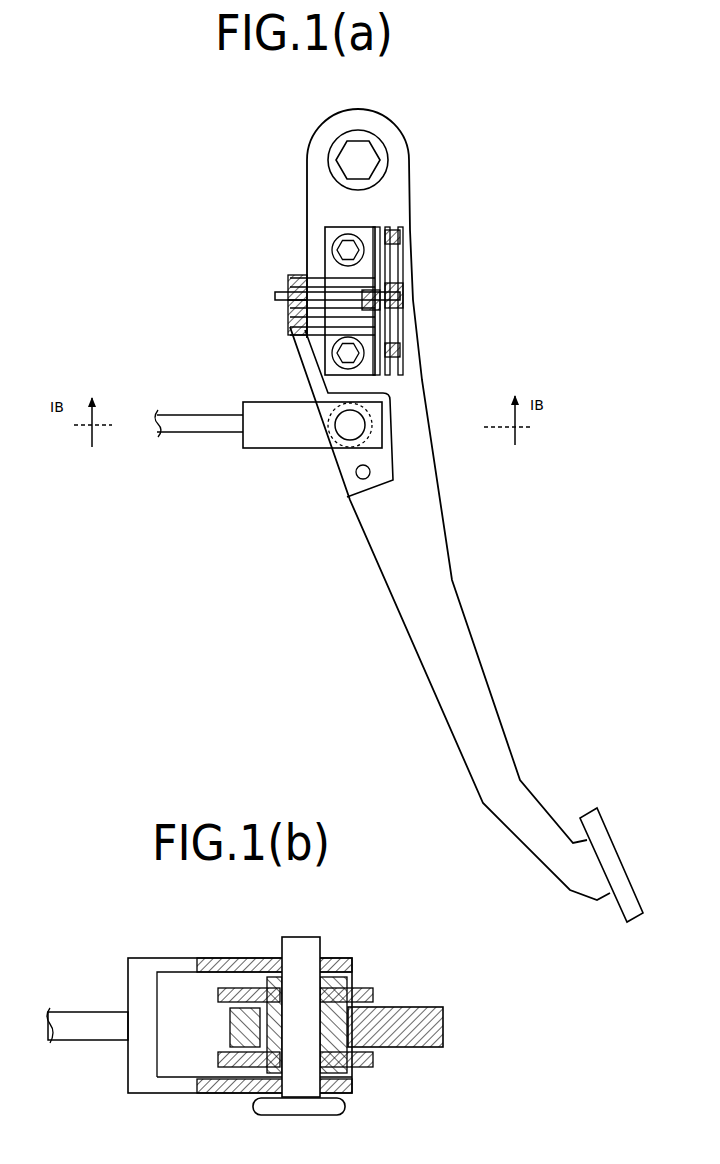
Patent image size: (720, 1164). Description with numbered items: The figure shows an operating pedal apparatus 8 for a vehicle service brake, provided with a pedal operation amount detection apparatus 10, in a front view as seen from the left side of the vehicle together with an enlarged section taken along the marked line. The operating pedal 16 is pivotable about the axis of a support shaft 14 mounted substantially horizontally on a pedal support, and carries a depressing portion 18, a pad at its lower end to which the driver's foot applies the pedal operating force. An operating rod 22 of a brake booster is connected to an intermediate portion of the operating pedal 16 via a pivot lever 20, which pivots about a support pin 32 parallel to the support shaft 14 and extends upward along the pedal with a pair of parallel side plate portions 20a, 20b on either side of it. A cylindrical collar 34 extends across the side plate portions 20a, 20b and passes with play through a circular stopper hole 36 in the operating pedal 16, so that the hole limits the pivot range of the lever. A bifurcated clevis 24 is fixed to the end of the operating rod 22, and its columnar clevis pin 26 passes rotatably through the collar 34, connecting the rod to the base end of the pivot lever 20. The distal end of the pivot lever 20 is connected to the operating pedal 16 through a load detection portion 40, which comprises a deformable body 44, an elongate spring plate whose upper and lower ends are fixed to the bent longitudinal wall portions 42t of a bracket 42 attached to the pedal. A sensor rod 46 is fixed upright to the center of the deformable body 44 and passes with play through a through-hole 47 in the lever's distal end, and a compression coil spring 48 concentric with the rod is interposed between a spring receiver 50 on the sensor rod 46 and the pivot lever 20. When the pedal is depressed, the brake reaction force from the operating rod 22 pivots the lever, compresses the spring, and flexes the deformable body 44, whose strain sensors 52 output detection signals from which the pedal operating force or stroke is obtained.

In FIG. 1A, the operating pedal apparatus 8 is at (222, 670).
In FIG. 1A, the pedal operation amount detection apparatus 10 is at (172, 249).
In FIG. 1A, the support shaft 14 is at (368, 160).
In FIG. 1A, the operating pedal 16 is at (452, 640).
In FIG. 1B, the operating pedal 16 is at (418, 1020).
In FIG. 1A, the depressing portion 18 is at (610, 858).
In FIG. 1A, the pivot lever 20 is at (305, 365).
In FIG. 1B, the pivot lever 20 is at (198, 1057).
In FIG. 1B, the side plate portion 20a is at (233, 995).
In FIG. 1B, the side plate portion 20b is at (243, 1058).
In FIG. 1A, the operating rod 22 is at (185, 433).
In FIG. 1B, the operating rod 22 is at (70, 1025).
In FIG. 1A, the clevis 24 is at (268, 435).
In FIG. 1B, the clevis 24 is at (177, 963).
In FIG. 1A, the clevis pin 26 is at (345, 420).
In FIG. 1B, the clevis pin 26 is at (300, 962).
In FIG. 1A, the support pin 32 is at (363, 480).
In FIG. 1B, the collar 34 is at (350, 988).
In FIG. 1A, the stopper hole 36 is at (380, 456).
In FIG. 1B, the stopper hole 36 is at (357, 1060).
In FIG. 1A, the load detection portion 40 is at (495, 266).
In FIG. 1A, the bracket 42 is at (360, 228).
In FIG. 1A, the longitudinal wall portion 42t is at (400, 243).
In FIG. 1A, the deformable body 44 is at (400, 320).
In FIG. 1A, the sensor rod 46 is at (275, 297).
In FIG. 1A, the through-hole 47 is at (295, 290).
In FIG. 1A, the compression coil spring 48 is at (290, 277).
In FIG. 1A, the spring receiver 50 is at (400, 292).
In FIG. 1A, the strain sensor 52 is at (297, 335).